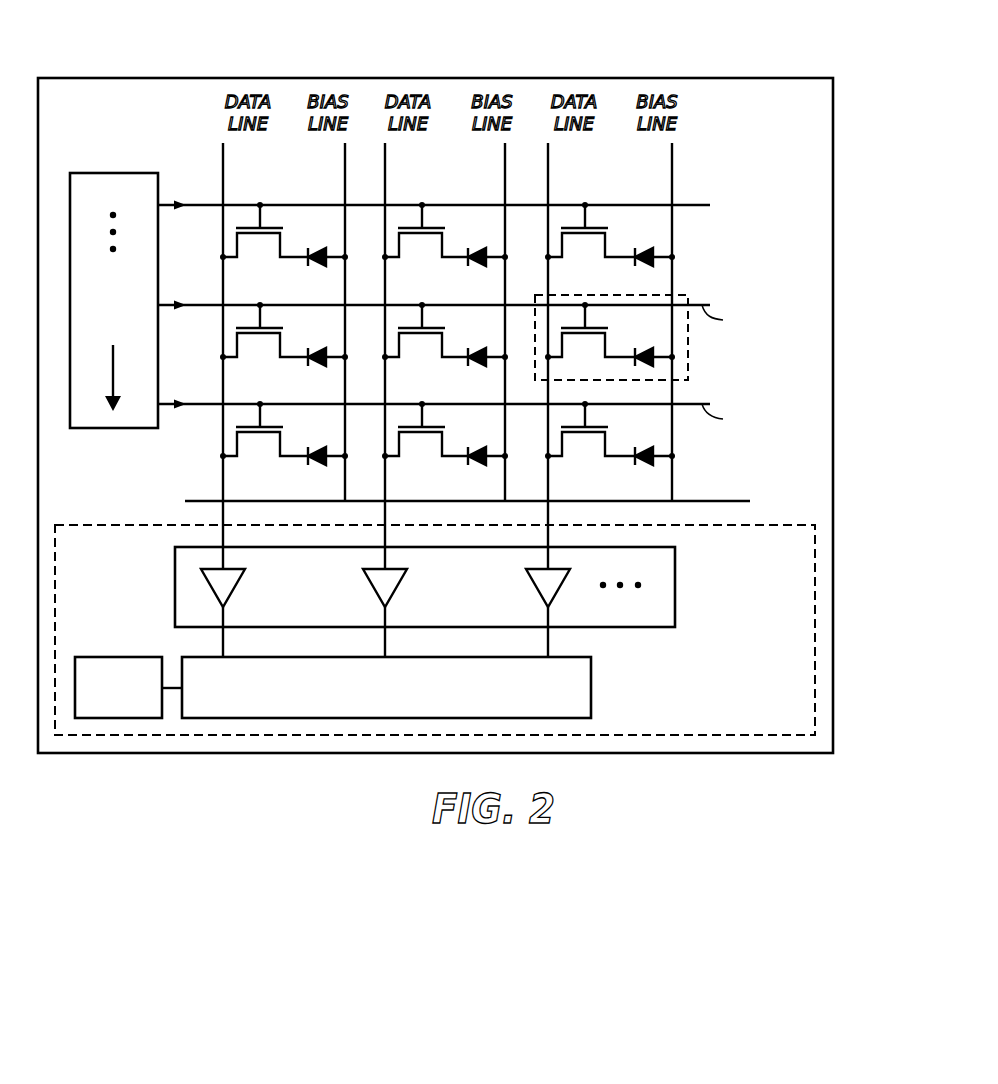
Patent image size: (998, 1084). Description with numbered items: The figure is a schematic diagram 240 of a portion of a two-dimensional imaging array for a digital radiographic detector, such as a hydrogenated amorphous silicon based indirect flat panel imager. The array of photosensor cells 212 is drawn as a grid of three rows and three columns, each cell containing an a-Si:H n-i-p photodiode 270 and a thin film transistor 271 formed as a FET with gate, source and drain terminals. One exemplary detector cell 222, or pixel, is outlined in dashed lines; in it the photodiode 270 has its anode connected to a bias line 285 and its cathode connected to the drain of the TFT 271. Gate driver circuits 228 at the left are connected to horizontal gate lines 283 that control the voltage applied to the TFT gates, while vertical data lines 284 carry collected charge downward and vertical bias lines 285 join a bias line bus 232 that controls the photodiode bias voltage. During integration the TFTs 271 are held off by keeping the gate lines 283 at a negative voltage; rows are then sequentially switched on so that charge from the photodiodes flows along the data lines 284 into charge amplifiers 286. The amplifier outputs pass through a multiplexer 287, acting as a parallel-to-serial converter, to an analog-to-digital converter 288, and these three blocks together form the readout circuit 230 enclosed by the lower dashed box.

The schematic diagram 240 is at (920, 77).
The readout circuits 230 is at (816, 707).
The gate driver circuits 228 is at (90, 172).
The array of photosensor cells 212 is at (475, 379).
The data lines 284 is at (423, 167).
The bias lines 285 is at (345, 195).
The gate lines 283 is at (702, 204).
The thin film transistor (TFT) 271 is at (580, 200).
The photodiode 270 is at (660, 249).
The detector cell 222 is at (690, 341).
The bias line bus 232 is at (507, 487).
The charge amplifiers 286 is at (677, 585).
The multiplexer 287 is at (593, 688).
The analog-to-digital converter (ADC) 288 is at (108, 657).